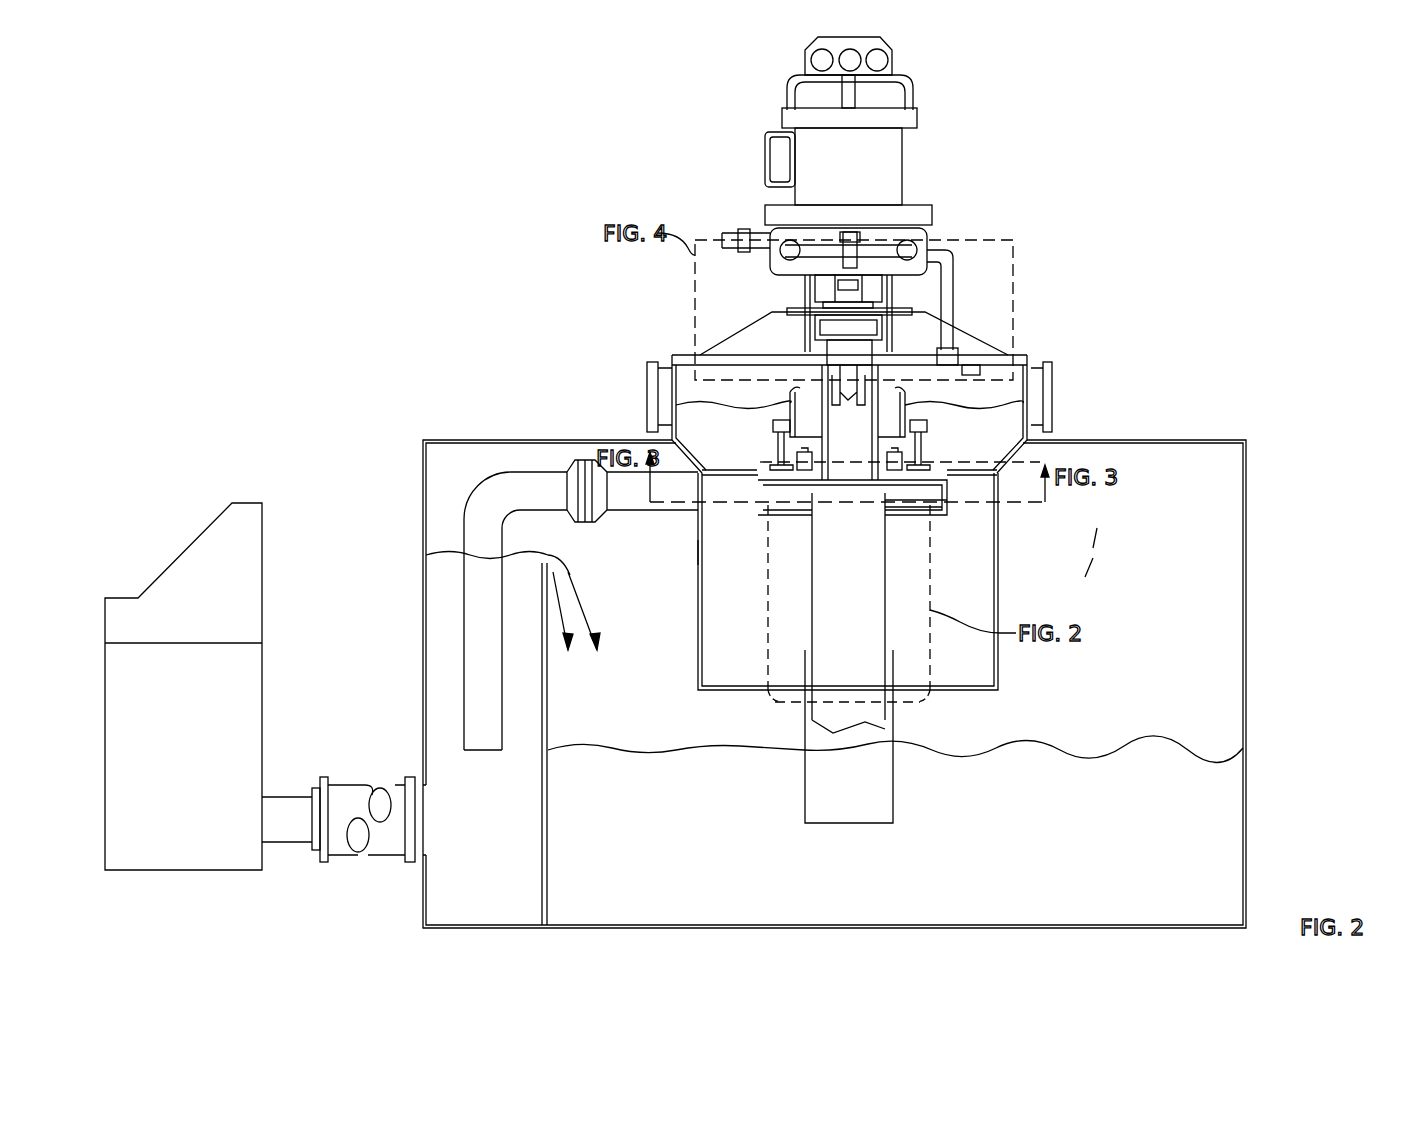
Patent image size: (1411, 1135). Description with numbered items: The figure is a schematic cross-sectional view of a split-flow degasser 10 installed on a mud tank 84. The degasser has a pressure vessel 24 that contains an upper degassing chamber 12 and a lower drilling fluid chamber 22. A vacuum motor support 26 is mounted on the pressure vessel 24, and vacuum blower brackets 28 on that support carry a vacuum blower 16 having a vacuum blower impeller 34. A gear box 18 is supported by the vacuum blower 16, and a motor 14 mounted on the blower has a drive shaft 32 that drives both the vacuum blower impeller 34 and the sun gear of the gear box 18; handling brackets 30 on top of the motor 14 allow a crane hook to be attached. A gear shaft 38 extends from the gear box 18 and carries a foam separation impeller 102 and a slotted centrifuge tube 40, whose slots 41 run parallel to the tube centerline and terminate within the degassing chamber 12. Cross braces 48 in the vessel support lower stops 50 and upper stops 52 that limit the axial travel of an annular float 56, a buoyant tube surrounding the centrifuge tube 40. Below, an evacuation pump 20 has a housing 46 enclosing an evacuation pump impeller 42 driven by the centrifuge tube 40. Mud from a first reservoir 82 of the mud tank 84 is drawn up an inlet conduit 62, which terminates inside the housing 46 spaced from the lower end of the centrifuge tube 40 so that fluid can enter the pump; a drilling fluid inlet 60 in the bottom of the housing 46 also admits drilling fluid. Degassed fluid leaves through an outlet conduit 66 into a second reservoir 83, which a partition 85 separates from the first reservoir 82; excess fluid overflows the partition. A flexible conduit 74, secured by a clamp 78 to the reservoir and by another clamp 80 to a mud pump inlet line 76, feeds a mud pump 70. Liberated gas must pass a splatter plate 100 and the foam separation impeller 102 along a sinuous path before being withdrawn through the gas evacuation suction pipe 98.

The split-flow degasser 10 is at (468, 208).
The degassing chamber 12 is at (720, 398).
The motor 14 is at (902, 170).
The vacuum blower 16 is at (930, 237).
The gear box 18 is at (815, 290).
The evacuation pump 20 is at (1108, 554).
The drilling fluid chamber 22 is at (743, 576).
The pressure vessel 24 is at (698, 552).
The vacuum motor support 26 is at (712, 345).
The vacuum blower brackets 28 is at (790, 311).
The handling brackets 30 is at (815, 62).
The drive shaft 32 is at (852, 225).
The vacuum blower impeller 34 is at (905, 245).
The gear shaft 38 is at (848, 393).
The slotted centrifuge tube 40 is at (859, 444).
The slots 41 is at (818, 375).
The evacuation pump impeller 42 is at (915, 506).
The housing 46 is at (922, 500).
The cross braces 48 is at (1005, 494).
The lower stops 50 is at (900, 458).
The upper stops 52 is at (925, 428).
The annular float 56 is at (893, 405).
The drilling fluid inlet 60 is at (797, 520).
The inlet conduit 62 is at (860, 580).
The outlet conduit 66 is at (632, 500).
The mud pump 70 is at (190, 751).
The conduit 74 is at (375, 855).
The mud pump inlet line 76 is at (290, 797).
The clamp 78 is at (410, 777).
The clamp 80 is at (324, 777).
The first reservoir 82 is at (635, 850).
The second reservoir 83 is at (498, 850).
The mud tank 84 is at (1246, 592).
The partition 85 is at (548, 680).
The gas evacuation suction pipe 98 is at (953, 280).
The splatter plate 100 is at (978, 355).
The foam separation impeller 102 is at (968, 375).